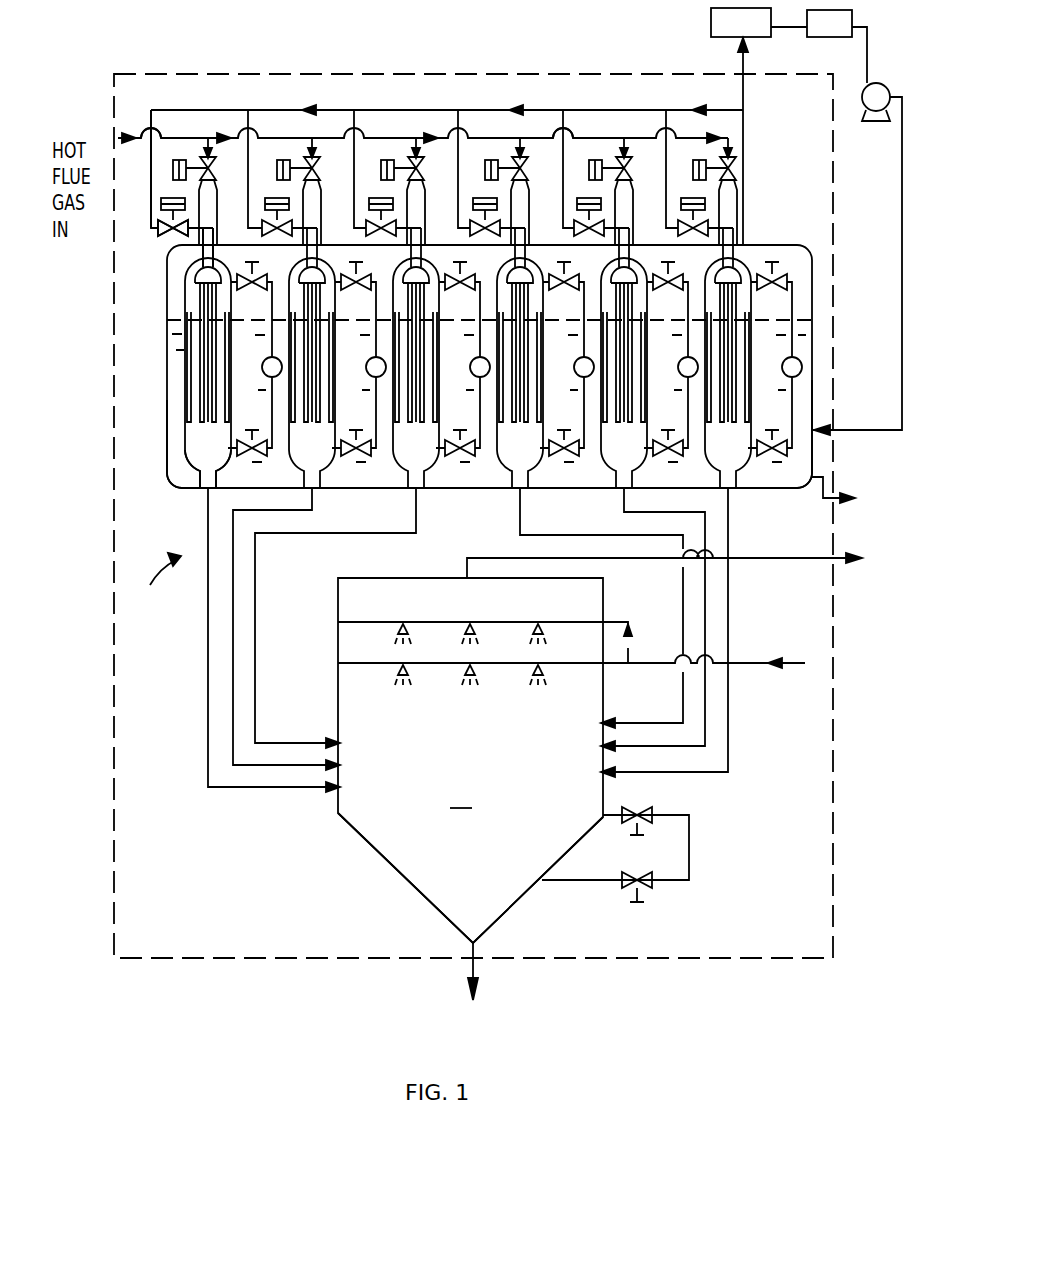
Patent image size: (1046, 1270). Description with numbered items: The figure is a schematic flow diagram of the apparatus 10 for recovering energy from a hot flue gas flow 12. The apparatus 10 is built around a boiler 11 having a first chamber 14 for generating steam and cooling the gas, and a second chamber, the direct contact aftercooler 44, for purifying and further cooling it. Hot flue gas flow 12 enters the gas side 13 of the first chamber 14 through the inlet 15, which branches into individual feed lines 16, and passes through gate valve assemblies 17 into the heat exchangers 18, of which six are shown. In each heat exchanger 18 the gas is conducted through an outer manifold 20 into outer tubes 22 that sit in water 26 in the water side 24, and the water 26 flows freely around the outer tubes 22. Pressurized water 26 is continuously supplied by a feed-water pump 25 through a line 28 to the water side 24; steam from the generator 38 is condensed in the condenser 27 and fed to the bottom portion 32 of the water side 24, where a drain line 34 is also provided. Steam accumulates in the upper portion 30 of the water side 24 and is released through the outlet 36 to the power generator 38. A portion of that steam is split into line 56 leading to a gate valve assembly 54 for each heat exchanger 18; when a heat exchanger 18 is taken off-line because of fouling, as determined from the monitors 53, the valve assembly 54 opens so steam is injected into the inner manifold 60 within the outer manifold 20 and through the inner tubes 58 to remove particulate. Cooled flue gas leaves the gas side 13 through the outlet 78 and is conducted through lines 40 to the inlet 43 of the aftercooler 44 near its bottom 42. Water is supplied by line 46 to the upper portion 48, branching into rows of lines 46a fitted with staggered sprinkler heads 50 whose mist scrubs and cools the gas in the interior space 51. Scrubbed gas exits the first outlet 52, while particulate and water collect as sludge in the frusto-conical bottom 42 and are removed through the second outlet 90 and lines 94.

The apparatus 10 is at (268, 962).
The boiler 11 is at (155, 579).
The hot flue gas flow 12 is at (120, 137).
The gas side 13 is at (186, 302).
The first chamber 14 is at (170, 472).
The inlet 15 is at (149, 125).
The feed lines 16 is at (224, 135).
The gate valve assemblies 17 is at (213, 167).
The heat exchangers 18 is at (205, 491).
The outer manifold 20 is at (296, 268).
The outer tubes 22 is at (196, 424).
The water side 24 is at (816, 420).
The feed-water pump 25 is at (876, 122).
The water 26 is at (796, 487).
The condenser 27 is at (818, 37).
The condensate return line 28 is at (902, 330).
The upper portion 30 is at (806, 258).
The bottom portion 32 is at (830, 474).
The drain line 34 is at (827, 512).
The outlet 36 is at (745, 94).
The power generator 38 is at (711, 22).
The lines 40 is at (233, 690).
The bottom 42 is at (456, 920).
The inlet 43 is at (334, 800).
The direct contact aftercooler 44 is at (338, 702).
The line 46 is at (711, 667).
The rows of lines 46a is at (578, 604).
The upper portion 48 is at (588, 586).
The sprinkler heads 50 is at (466, 628).
The interior space 51 is at (470, 824).
The first outlet 52 is at (749, 574).
The temperature monitor 53 is at (251, 284).
The gate valve assembly 54 is at (157, 229).
The line 56 is at (243, 127).
The inner tubes 58 is at (206, 342).
The inner manifold 60 is at (216, 254).
The outlet 78 is at (516, 506).
The second outlet 90 is at (480, 945).
The lines 94 is at (480, 972).